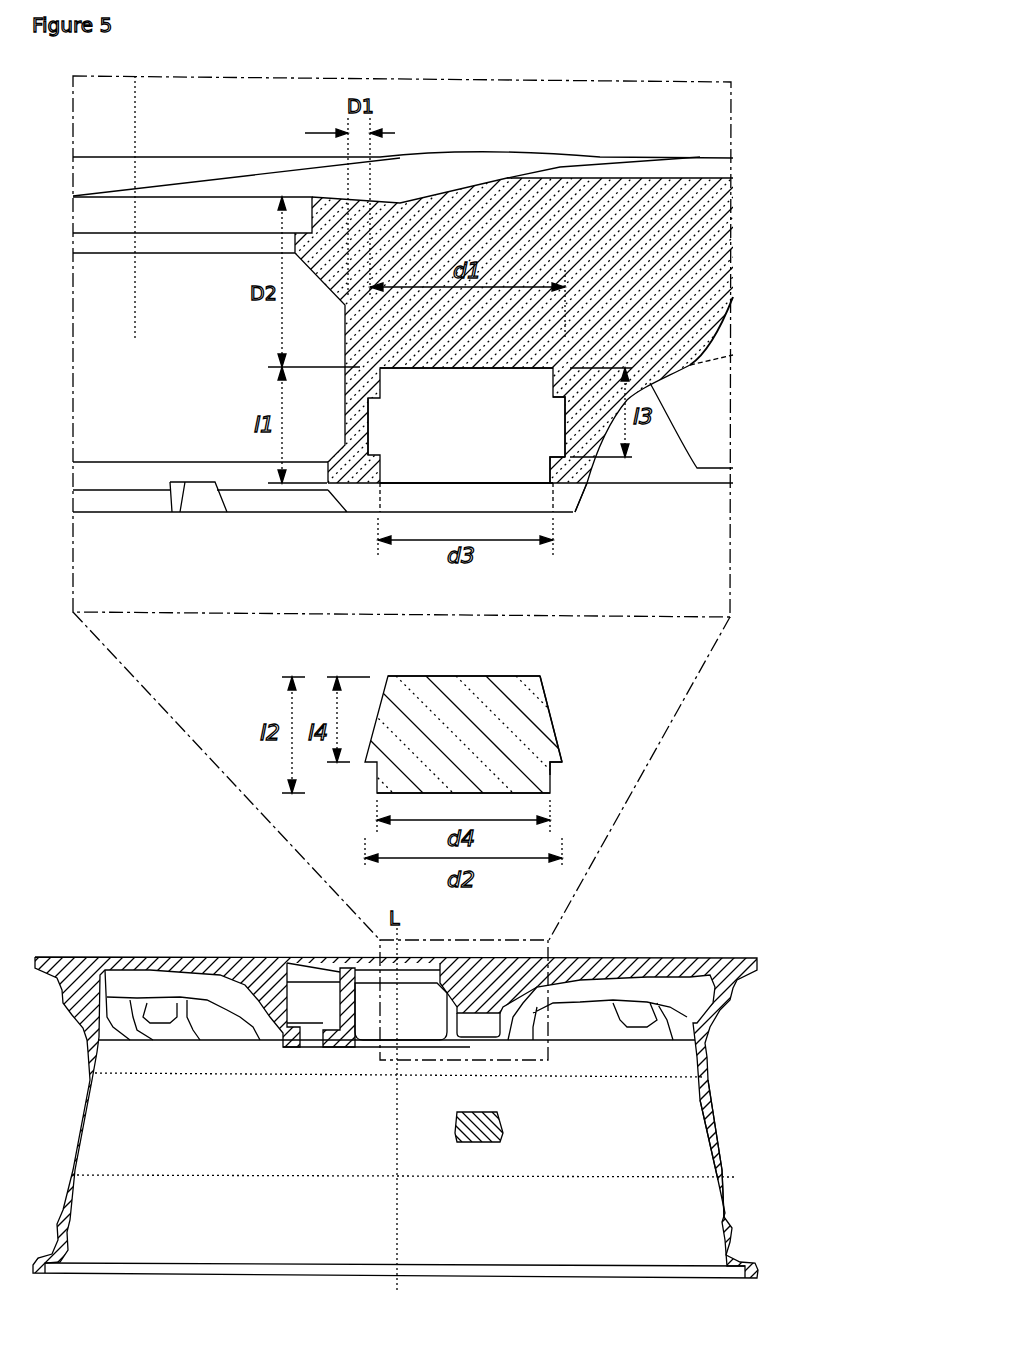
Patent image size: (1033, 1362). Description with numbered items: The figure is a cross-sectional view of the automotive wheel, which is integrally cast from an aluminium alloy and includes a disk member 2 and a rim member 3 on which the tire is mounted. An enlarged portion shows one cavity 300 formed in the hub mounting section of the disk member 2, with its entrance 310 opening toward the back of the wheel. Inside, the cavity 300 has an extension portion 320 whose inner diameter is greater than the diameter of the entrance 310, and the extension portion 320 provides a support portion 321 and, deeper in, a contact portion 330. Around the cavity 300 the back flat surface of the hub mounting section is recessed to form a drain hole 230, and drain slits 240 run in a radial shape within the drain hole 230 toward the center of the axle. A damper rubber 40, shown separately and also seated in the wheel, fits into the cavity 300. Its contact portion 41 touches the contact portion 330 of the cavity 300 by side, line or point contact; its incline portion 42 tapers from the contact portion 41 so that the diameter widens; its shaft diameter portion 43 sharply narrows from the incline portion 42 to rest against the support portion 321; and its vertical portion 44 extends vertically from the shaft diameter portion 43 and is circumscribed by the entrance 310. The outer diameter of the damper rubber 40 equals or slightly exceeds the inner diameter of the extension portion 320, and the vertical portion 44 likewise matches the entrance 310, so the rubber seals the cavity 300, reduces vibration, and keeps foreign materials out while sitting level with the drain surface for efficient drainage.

The disk member 2 is at (173, 948).
The rim member 3 is at (732, 1152).
The damper rubber 40 is at (568, 683).
The contact portion 41 is at (457, 676).
The incline portion 42 is at (555, 719).
The shaft diameter portion 43 is at (561, 763).
The vertical portion 44 is at (553, 792).
The drain hole 230 is at (523, 497).
The drain slit 240 is at (573, 497).
The cavity 300 is at (431, 490).
The entrance 310 is at (500, 474).
The extension portion 320 is at (563, 420).
The support portion 321 is at (553, 457).
The contact portion 330 is at (432, 368).